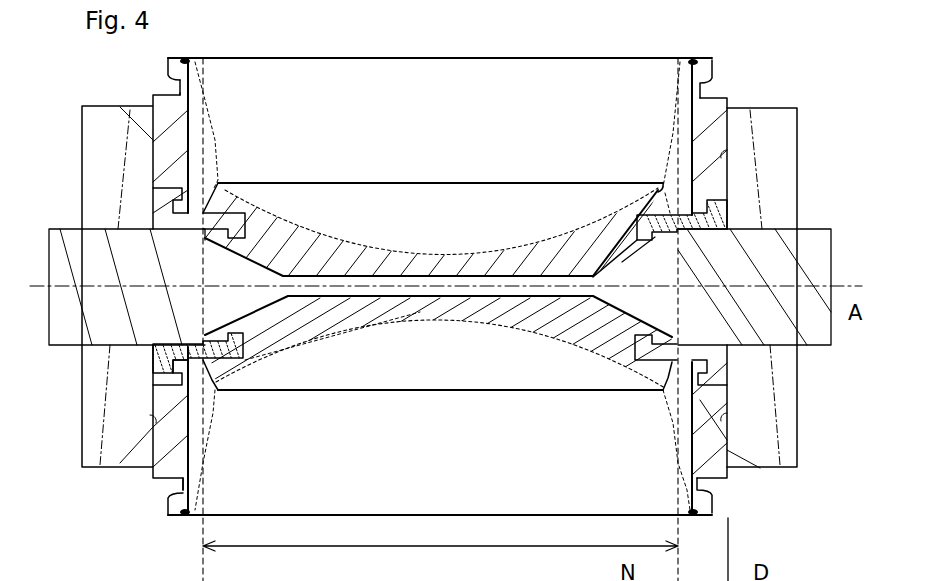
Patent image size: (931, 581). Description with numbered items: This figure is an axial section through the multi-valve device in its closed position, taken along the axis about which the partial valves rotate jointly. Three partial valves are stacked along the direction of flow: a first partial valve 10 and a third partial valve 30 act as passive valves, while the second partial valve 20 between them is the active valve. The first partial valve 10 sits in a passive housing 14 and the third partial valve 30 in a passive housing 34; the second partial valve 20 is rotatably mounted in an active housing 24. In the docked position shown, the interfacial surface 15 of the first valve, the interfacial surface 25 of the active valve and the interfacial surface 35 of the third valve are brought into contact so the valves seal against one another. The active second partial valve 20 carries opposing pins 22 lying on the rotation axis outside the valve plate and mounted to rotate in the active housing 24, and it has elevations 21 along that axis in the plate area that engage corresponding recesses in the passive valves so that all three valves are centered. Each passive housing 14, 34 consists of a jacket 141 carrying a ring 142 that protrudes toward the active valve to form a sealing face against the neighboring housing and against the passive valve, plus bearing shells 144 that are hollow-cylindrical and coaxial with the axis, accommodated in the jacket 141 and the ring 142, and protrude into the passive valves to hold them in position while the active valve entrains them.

The first partial valve 10 is at (305, 237).
The passive housing 14 is at (175, 127).
The jacket 141 is at (175, 127).
The ring 142 is at (202, 130).
The bearing shells 144 is at (228, 218).
The interfacial surface 15 is at (490, 283).
The second partial valve 20 is at (397, 278).
The elevations 21 is at (665, 262).
The pins 22 is at (812, 252).
The active housing 24 is at (102, 172).
The interfacial surface 25 is at (585, 305).
The third partial valve 30 is at (525, 310).
The passive housing 34 is at (713, 435).
The interfacial surface 35 is at (585, 305).